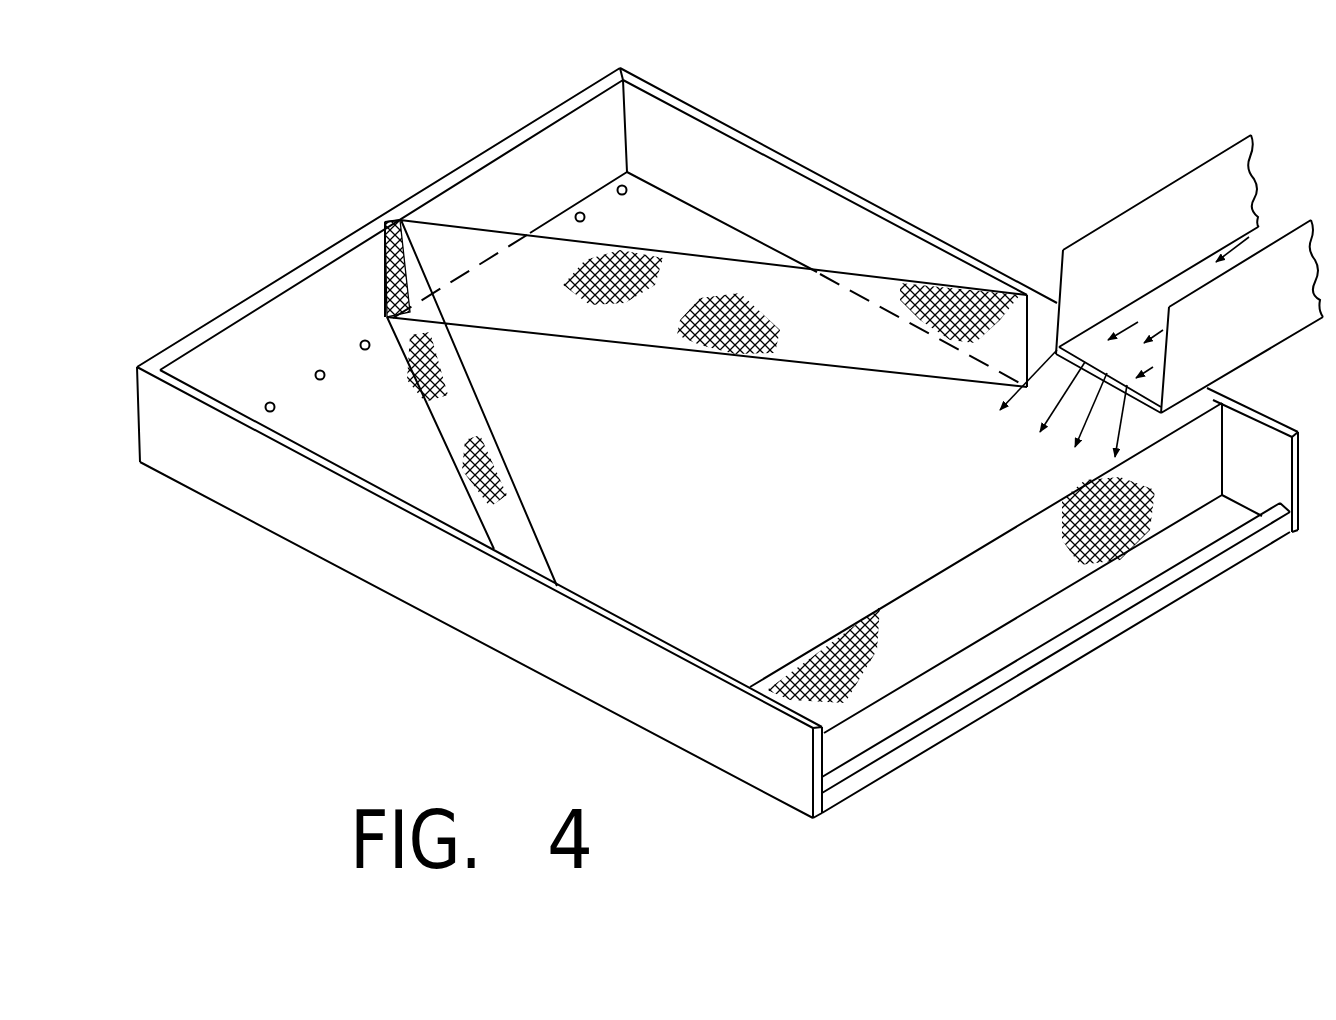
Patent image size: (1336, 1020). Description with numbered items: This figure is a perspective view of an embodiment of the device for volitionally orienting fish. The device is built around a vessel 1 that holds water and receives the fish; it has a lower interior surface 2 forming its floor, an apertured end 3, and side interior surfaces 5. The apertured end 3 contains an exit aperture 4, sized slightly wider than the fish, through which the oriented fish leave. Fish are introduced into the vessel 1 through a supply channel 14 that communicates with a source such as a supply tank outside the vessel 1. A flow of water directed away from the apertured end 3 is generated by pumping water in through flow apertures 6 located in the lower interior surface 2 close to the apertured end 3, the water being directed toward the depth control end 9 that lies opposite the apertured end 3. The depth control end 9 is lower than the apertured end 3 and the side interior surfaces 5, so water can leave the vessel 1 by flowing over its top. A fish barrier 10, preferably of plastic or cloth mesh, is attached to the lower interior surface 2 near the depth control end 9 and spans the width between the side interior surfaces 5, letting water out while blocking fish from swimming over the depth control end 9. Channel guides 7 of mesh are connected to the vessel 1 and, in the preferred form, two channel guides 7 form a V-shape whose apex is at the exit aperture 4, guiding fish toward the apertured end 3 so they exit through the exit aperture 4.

The vessel 1 is at (892, 172).
The lower interior surface 2 is at (810, 439).
The apertured end 3 is at (548, 140).
The exit aperture 4 is at (388, 222).
The side interior surface 5 is at (410, 571).
The flow apertures 6 is at (275, 406).
The channel guide 7 is at (658, 347).
The depth control end 9 is at (1100, 644).
The fish barrier 10 is at (985, 546).
The supply channel 14 is at (1258, 338).